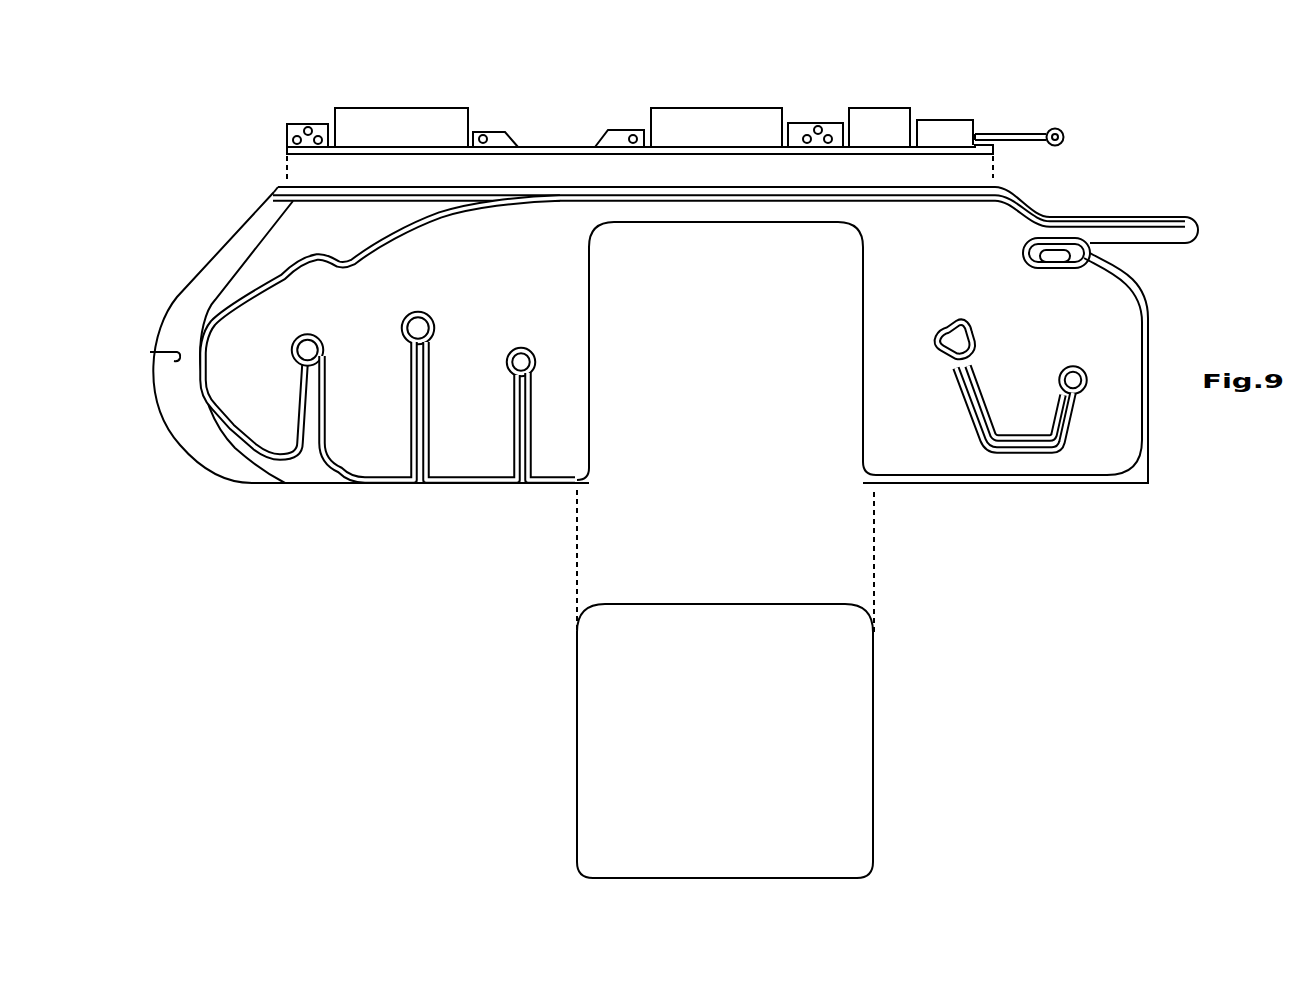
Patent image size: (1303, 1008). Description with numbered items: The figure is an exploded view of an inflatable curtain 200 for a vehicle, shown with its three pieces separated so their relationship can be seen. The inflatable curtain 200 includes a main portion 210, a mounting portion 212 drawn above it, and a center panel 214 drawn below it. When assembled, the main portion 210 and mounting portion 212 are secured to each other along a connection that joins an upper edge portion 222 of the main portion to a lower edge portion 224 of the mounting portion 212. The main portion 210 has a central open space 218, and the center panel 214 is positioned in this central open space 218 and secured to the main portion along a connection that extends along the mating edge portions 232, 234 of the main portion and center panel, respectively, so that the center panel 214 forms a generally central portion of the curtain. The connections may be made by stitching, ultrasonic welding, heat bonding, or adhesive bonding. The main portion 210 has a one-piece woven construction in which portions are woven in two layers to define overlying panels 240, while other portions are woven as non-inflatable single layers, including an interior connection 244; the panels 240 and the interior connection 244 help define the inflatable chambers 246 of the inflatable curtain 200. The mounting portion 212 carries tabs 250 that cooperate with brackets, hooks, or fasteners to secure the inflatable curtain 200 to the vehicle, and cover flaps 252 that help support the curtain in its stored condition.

The inflatable curtain 200 is at (178, 180).
The main portion 210 is at (247, 513).
The mounting portion 212 is at (251, 125).
The center panel 214 is at (840, 713).
The central open space 218 is at (773, 417).
The upper edge portion 222 is at (556, 190).
The lower edge portion 224 is at (707, 148).
The mating edge portion 232 is at (861, 331).
The mating edge portion 234 is at (865, 777).
The overlying panels 240 is at (912, 437).
The interior connection 244 is at (413, 358).
The inflatable chambers 246 is at (553, 450).
The tabs 250 is at (297, 128).
The cover flaps 252 is at (385, 122).